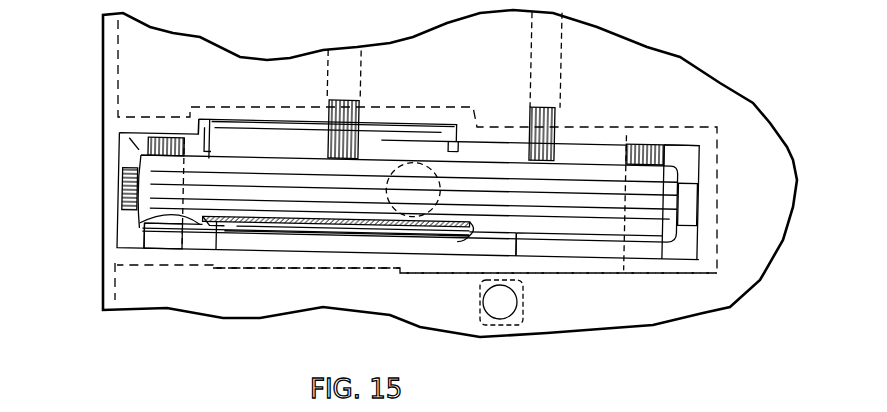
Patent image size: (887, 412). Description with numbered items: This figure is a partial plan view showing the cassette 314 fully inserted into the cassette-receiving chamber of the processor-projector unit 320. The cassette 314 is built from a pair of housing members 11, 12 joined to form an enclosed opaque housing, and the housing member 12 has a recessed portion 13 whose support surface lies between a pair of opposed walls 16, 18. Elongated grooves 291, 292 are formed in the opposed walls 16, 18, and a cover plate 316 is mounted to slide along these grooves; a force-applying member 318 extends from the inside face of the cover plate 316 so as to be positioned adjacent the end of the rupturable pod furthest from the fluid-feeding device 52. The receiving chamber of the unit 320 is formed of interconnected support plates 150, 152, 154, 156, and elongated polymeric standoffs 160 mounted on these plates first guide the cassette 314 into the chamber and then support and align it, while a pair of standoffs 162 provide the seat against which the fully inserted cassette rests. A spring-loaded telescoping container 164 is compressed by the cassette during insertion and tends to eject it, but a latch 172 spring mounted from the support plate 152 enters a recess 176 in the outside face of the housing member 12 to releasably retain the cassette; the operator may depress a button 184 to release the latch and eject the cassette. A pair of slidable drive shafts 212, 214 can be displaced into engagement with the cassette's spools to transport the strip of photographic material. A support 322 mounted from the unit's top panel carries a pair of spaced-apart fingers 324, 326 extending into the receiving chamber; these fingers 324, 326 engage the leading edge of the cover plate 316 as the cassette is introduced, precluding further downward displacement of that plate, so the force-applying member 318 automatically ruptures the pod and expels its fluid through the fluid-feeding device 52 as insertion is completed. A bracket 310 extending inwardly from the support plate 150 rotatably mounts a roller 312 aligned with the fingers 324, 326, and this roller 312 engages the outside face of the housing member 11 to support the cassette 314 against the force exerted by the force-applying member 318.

The housing member 11 is at (175, 130).
The housing member 12 is at (173, 225).
The recessed portion 13 is at (462, 225).
The opposed wall 16 is at (463, 255).
The opposed wall 18 is at (210, 232).
The fluid-feeding device 52 is at (281, 220).
The support plate 150 is at (610, 128).
The support plate 152 is at (615, 267).
The support plate 154 is at (112, 149).
The support plate 156 is at (718, 168).
The standoffs 160 is at (180, 137).
The standoffs 162 is at (118, 125).
The telescoping container 164 is at (445, 178).
The latch 172 is at (527, 250).
The recess 176 is at (518, 228).
The button 184 is at (517, 308).
The drive shaft 212 is at (560, 138).
The drive shaft 214 is at (386, 112).
The elongated groove 291 is at (467, 240).
The elongated groove 292 is at (143, 223).
The bracket 310 is at (460, 128).
The roller 312 is at (415, 123).
The cassette 314 is at (688, 160).
The cover plate 316 is at (332, 235).
The force-applying member 318 is at (300, 222).
The processor-projector unit 320 is at (97, 300).
The support 322 is at (305, 268).
The finger 324 is at (253, 237).
The finger 326 is at (410, 236).